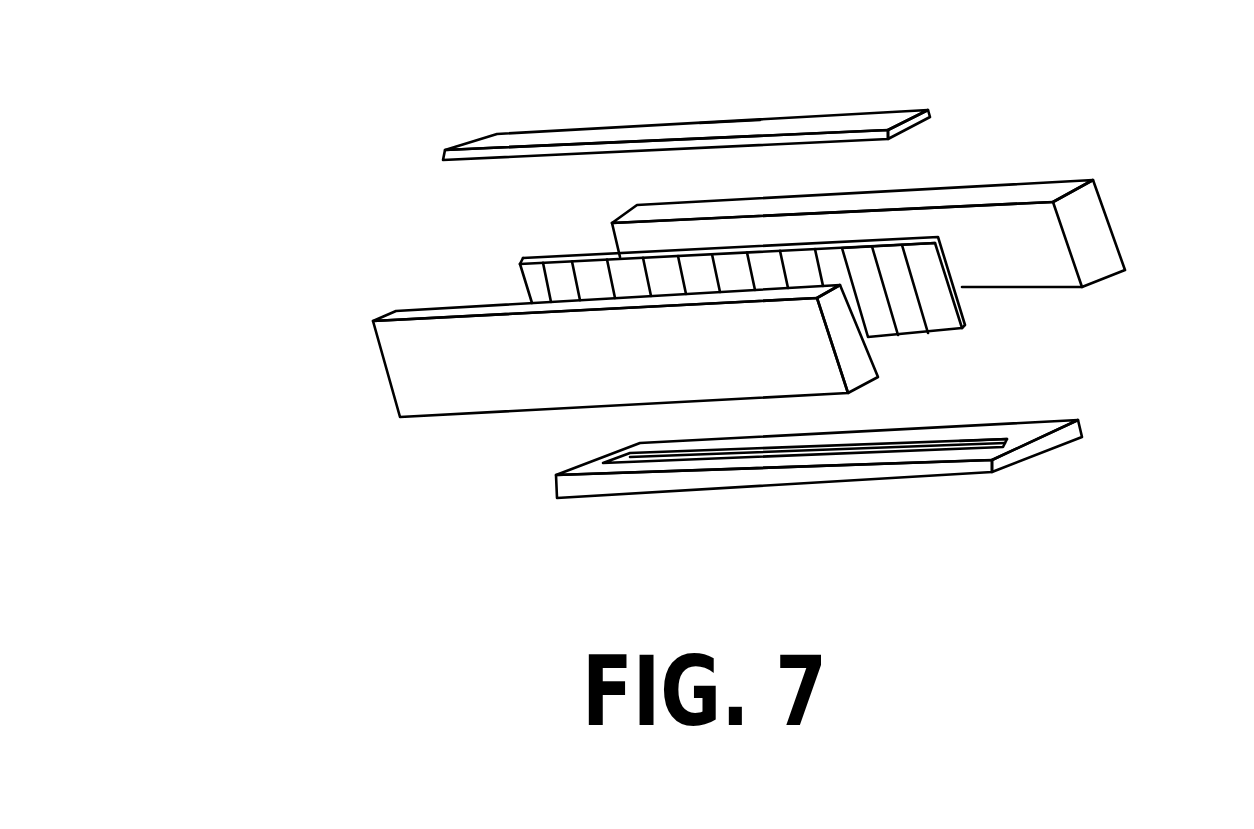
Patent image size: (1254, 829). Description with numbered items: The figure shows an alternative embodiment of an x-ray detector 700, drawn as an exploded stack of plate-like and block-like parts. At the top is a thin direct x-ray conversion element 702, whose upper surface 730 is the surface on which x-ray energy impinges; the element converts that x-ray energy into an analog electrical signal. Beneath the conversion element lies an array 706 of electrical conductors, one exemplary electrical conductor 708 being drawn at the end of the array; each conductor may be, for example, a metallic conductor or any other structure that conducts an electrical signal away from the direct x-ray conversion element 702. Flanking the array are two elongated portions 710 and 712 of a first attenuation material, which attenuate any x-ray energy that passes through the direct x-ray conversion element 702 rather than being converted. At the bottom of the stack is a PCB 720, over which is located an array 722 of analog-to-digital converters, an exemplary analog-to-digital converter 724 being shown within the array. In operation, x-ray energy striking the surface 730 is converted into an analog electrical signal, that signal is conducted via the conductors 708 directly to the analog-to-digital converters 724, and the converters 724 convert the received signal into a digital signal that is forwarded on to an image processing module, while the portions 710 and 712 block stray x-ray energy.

The x-ray detector 700 is at (192, 70).
The direct x-ray conversion element 702 is at (537, 130).
The array of electrical conductors 706 is at (523, 263).
The electrical conductor 708 is at (930, 332).
The portion of first attenuation material 710 is at (372, 347).
The portion of first attenuation material 712 is at (1125, 248).
The PCB 720 is at (553, 492).
The array of analog-to-digital converters 722 is at (1008, 438).
The analog-to-digital converter 724 is at (932, 447).
The surface of direct x-ray conversion element 730 is at (763, 92).